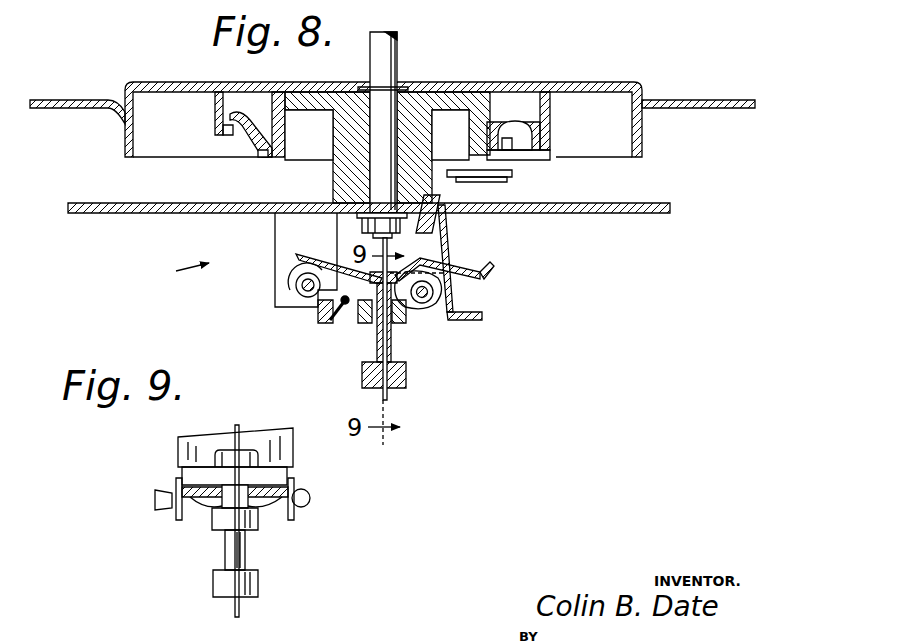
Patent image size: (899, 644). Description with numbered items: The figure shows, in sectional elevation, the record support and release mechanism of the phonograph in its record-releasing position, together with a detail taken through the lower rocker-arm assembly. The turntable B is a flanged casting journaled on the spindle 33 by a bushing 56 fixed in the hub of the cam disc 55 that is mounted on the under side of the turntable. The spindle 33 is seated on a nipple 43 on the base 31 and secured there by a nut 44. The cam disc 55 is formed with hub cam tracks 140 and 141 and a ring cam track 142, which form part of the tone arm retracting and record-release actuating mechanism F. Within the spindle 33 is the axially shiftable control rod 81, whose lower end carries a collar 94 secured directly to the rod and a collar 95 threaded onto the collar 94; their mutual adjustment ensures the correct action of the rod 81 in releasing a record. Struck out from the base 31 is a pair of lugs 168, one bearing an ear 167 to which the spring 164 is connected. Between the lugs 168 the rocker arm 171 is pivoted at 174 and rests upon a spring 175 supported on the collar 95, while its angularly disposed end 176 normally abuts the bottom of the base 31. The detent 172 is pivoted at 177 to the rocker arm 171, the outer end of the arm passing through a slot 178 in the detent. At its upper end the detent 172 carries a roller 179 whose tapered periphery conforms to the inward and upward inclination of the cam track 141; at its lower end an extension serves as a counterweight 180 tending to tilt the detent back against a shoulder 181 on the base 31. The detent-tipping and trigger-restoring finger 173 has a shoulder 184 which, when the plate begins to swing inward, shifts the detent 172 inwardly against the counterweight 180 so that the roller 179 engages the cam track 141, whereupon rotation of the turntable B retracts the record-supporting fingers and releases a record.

In FIG. 8, the turntable B is at (499, 81).
In FIG. 8, the tone arm retracting and record-release actuating mechanism F is at (180, 271).
In FIG. 8, the base 31 is at (152, 214).
In FIG. 8, the spindle 33 is at (398, 42).
In FIG. 8, the nipple 43 is at (346, 190).
In FIG. 8, the nut 44 is at (360, 226).
In FIG. 8, the cam disc 55 is at (552, 100).
In FIG. 8, the bushing 56 is at (402, 108).
In FIG. 8, the control rod 81 is at (388, 400).
In FIG. 9, the control rod 81 is at (241, 611).
In FIG. 8, the collar 94 is at (362, 374).
In FIG. 9, the collar 94 is at (258, 583).
In FIG. 8, the collar 95 is at (401, 324).
In FIG. 9, the collar 95 is at (258, 530).
In FIG. 8, the hub cam track 140 is at (333, 141).
In FIG. 8, the hub cam track 141 is at (340, 163).
In FIG. 8, the ring cam track 142 is at (229, 137).
In FIG. 8, the spring 164 is at (344, 312).
In FIG. 8, the ear 167 is at (322, 318).
In FIG. 8, the lugs 168 is at (287, 250).
In FIG. 8, the rocker arm 171 is at (468, 283).
In FIG. 9, the rocker arm 171 is at (196, 478).
In FIG. 8, the detent 172 is at (448, 240).
In FIG. 9, the detent 172 is at (267, 438).
In FIG. 8, the detent-tipping and trigger-restoring finger 173 is at (552, 158).
In FIG. 8, the pivot 174 is at (298, 291).
In FIG. 9, the pivot 174 is at (310, 500).
In FIG. 8, the spring 175 is at (408, 300).
In FIG. 9, the spring 175 is at (200, 505).
In FIG. 8, the angularly disposed end 176 is at (492, 268).
In FIG. 8, the pivot 177 is at (430, 299).
In FIG. 8, the slot 178 is at (461, 262).
In FIG. 9, the slot 178 is at (215, 452).
In FIG. 8, the roller 179 is at (440, 194).
In FIG. 8, the counterweight 180 is at (488, 317).
In FIG. 8, the shoulder 181 is at (452, 212).
In FIG. 8, the shoulder 184 is at (506, 182).